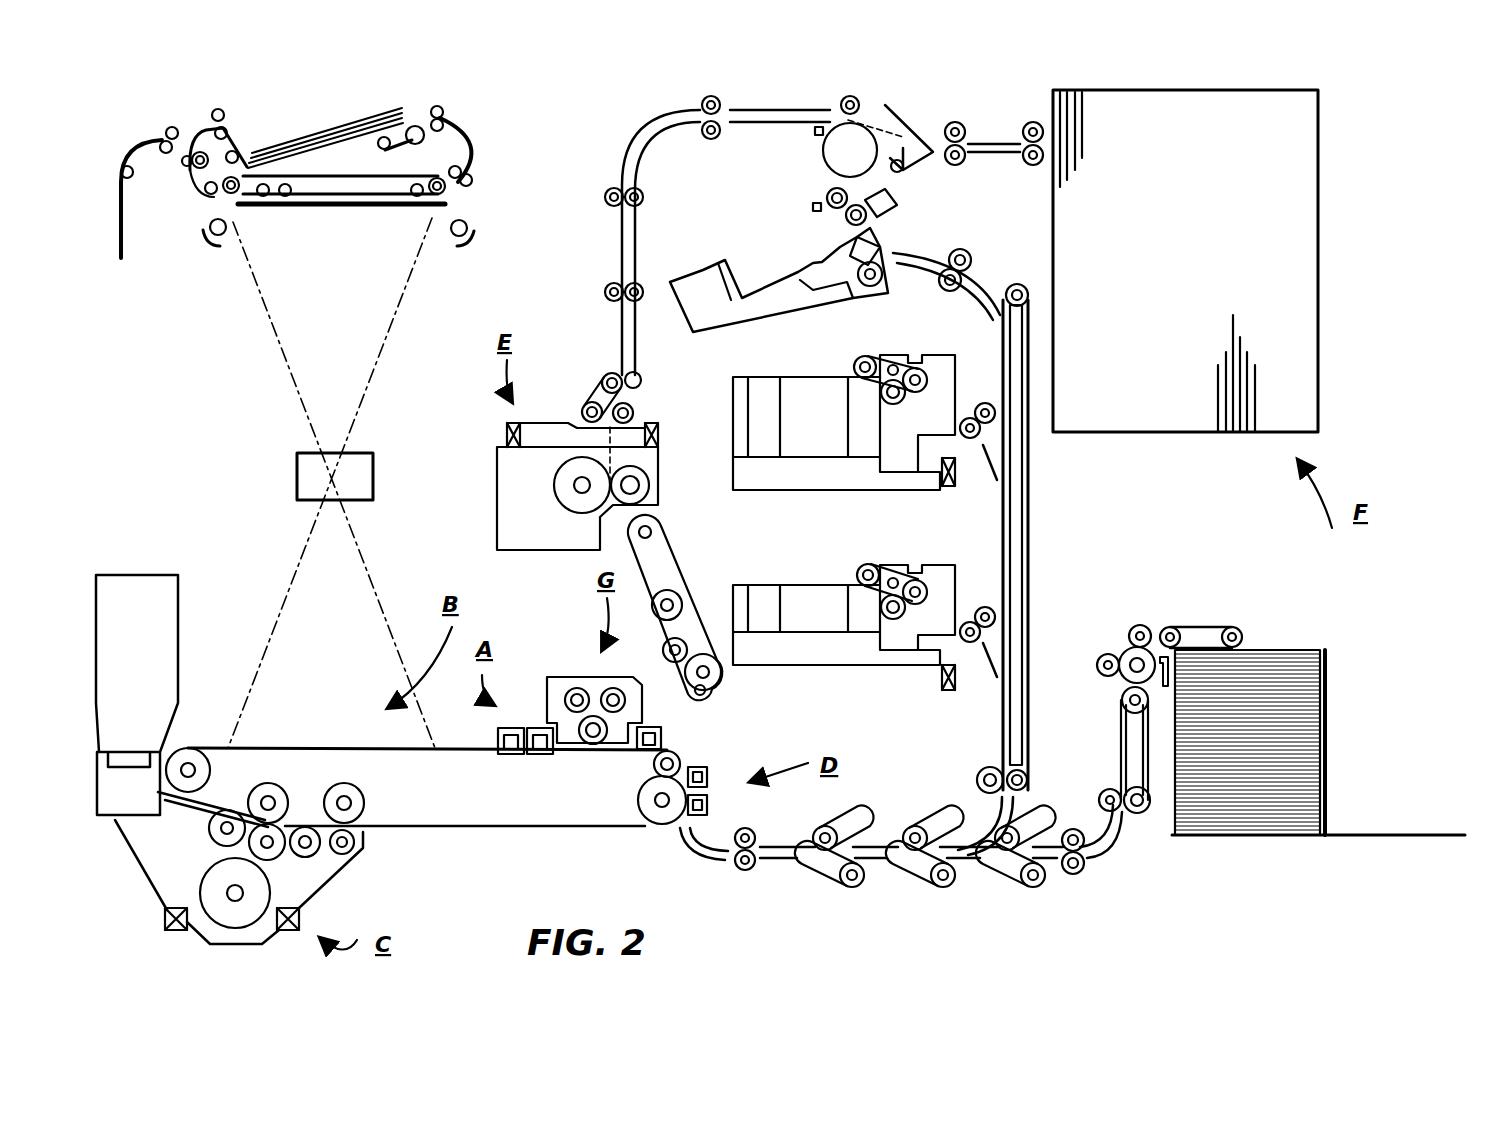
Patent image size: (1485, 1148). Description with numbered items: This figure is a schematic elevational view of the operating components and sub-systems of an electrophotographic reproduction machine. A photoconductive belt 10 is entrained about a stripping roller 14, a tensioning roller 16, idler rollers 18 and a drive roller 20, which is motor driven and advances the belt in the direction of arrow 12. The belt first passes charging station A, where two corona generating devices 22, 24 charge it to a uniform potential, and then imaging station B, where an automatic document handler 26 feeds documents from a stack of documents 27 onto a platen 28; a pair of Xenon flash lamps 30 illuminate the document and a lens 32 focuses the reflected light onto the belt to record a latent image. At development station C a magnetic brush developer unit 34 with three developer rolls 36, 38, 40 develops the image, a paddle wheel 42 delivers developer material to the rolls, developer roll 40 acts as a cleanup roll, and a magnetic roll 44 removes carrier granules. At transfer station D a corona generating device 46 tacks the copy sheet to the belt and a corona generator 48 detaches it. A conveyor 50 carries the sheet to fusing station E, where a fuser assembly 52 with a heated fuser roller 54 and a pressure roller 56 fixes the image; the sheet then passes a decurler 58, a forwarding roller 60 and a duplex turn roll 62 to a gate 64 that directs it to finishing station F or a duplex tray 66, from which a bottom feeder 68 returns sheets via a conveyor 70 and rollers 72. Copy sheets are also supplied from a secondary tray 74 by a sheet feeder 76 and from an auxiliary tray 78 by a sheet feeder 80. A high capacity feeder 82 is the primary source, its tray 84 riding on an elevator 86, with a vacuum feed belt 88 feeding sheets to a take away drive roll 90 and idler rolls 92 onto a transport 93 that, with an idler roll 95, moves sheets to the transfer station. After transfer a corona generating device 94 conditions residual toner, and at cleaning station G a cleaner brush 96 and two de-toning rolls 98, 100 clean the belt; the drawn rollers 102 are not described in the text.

The photoconductive belt 10 is at (470, 752).
The arrow 12 is at (540, 835).
The stripping roller 14 is at (655, 763).
The tensioning roller 16 is at (200, 765).
The idler rollers 18 is at (342, 790).
The drive roller 20 is at (646, 812).
The corona generating device 22 is at (536, 727).
The corona generating device 24 is at (496, 730).
The automatic document handler 26 is at (498, 152).
The stack of documents 27 is at (402, 120).
The platen 28 is at (372, 208).
The Xenon flash lamps 30 is at (232, 228).
The lens 32 is at (357, 475).
The magnetic brush developer unit 34 is at (273, 877).
The developer roll 36 is at (200, 845).
The developer roll 38 is at (233, 853).
The developer roll 40 is at (290, 870).
The paddle wheel 42 is at (163, 912).
The magnetic roll 44 is at (358, 850).
The corona generating device 46 is at (708, 817).
The corona generator 48 is at (708, 764).
The conveyor 50 is at (720, 707).
The fuser assembly 52 is at (592, 439).
The heated fuser roller 54 is at (565, 492).
The pressure roller 56 is at (642, 487).
The decurler 58 is at (593, 390).
The forwarding roller 60 is at (608, 192).
The duplex turn roll 62 is at (890, 160).
The gate 64 is at (906, 130).
The duplex tray 66 is at (796, 275).
The bottom feeder 68 is at (862, 290).
The conveyor 70 is at (1030, 516).
The rollers 72 is at (942, 823).
The secondary tray 74 is at (852, 425).
The sheet feeder 76 is at (888, 358).
The auxiliary tray 78 is at (847, 612).
The sheet feeder 80 is at (880, 567).
The high capacity feeder 82 is at (1258, 723).
The tray 84 is at (1273, 810).
The elevator 86 is at (1293, 837).
The vacuum feed belt 88 is at (1203, 625).
The take away drive roll 90 is at (1138, 672).
The idler rolls 92 is at (1108, 658).
The transport 93 is at (1120, 743).
The corona generating device 94 is at (660, 742).
The idler roll 95 is at (1125, 835).
The cleaner brush 96 is at (579, 671).
The de-toning roll 98 is at (607, 688).
The de-toning roll 100 is at (572, 692).
The duplex path rollers 102 is at (1043, 125).